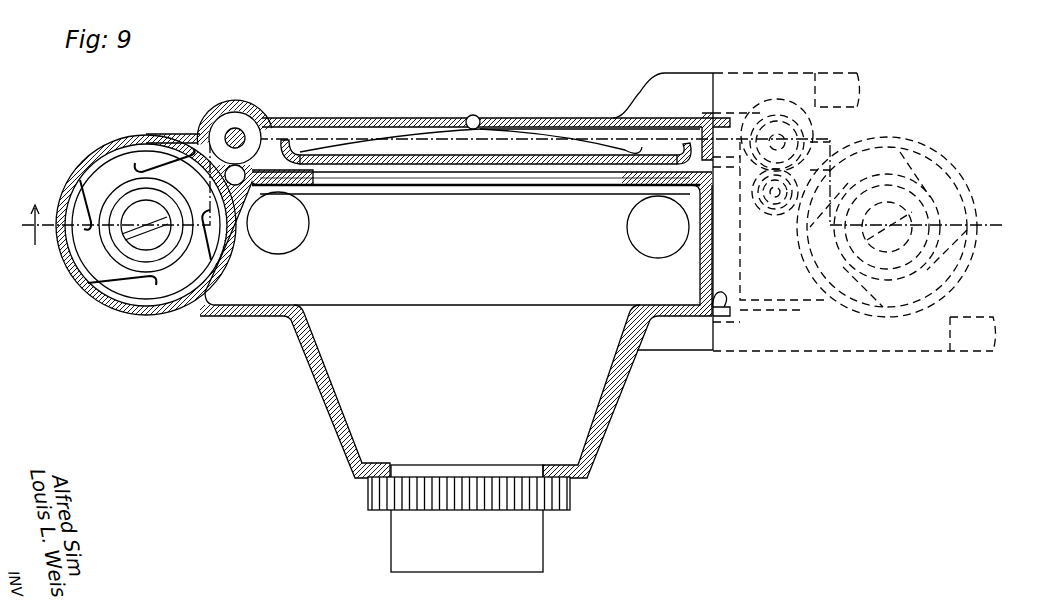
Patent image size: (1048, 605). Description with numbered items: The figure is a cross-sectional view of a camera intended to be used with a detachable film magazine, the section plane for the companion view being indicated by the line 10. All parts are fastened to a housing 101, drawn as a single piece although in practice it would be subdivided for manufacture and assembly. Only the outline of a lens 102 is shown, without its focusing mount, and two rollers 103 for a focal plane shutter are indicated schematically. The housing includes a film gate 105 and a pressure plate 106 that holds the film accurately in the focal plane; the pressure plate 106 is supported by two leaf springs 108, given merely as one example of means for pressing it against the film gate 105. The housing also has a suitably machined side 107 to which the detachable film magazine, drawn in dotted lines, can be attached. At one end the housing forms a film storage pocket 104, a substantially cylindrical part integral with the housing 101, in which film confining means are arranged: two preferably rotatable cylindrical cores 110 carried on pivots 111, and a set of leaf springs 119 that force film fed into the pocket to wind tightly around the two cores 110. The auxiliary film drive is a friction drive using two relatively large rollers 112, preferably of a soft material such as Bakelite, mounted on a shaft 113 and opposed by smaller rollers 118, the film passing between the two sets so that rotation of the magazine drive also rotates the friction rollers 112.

The line 10— 10 is at (516, 159).
The housing 101 is at (316, 352).
The lens 102 is at (398, 533).
The rollers 103 is at (303, 236).
The film storage pocket 104 is at (86, 256).
The film gate 105 is at (453, 178).
The pressure plate 106 is at (383, 155).
The machined side 107 is at (714, 300).
The leaf springs 108 is at (541, 133).
The cylindrical cores 110 is at (170, 268).
The pivots 111 is at (146, 225).
The rollers 112 is at (247, 122).
The shaft 113 is at (231, 130).
The smaller rollers 118 is at (236, 182).
The leaf springs 119 is at (155, 158).